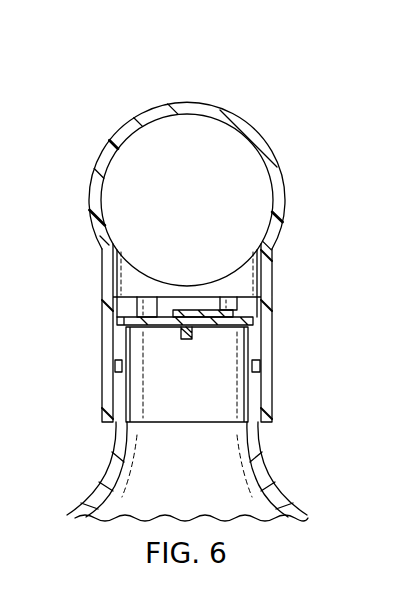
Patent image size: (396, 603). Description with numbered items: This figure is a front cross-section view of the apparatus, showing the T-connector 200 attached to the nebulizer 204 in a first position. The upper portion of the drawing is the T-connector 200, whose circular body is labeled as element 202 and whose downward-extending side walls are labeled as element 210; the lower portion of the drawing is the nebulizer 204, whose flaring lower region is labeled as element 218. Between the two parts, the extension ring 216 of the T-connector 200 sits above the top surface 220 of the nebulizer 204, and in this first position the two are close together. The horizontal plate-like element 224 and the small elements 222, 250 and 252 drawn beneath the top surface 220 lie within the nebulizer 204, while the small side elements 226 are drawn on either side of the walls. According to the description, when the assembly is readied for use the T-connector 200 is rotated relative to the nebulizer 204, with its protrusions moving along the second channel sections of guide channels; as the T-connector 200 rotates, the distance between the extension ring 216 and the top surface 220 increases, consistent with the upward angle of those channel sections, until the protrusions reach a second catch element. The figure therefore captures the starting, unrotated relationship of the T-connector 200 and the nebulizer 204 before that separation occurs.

The T-connector 200 is at (97, 110).
The ring 202 is at (203, 104).
The nebulizer 204 is at (87, 436).
The sidewall 210 is at (101, 283).
The extension ring 216 is at (133, 300).
The skirt 218 is at (102, 476).
The top surface 220 is at (253, 320).
The first contact 222 is at (163, 327).
The insert 224 is at (203, 310).
The retention tabs 226 is at (115, 367).
The second contact 250 is at (217, 327).
The post 252 is at (188, 340).